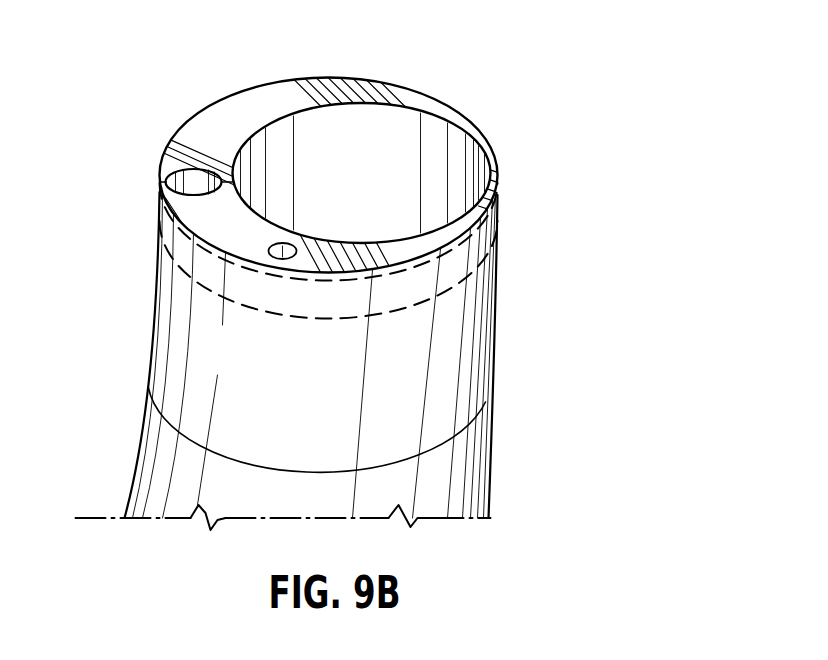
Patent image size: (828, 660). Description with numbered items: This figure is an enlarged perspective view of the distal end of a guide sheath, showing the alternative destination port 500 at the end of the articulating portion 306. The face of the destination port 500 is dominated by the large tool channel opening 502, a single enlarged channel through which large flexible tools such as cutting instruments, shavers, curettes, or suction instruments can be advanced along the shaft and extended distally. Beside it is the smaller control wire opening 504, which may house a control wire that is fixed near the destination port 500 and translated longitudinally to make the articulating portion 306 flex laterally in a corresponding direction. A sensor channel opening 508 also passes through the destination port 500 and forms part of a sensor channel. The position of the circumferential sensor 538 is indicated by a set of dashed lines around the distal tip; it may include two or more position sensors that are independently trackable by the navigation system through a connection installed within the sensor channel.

The articulating portion 306 is at (158, 495).
The destination port 500 is at (518, 207).
The tool channel opening 502 is at (410, 160).
The control wire opening 504 is at (283, 250).
The sensor channel opening 508 is at (195, 178).
The circumferential sensor 538 is at (185, 273).